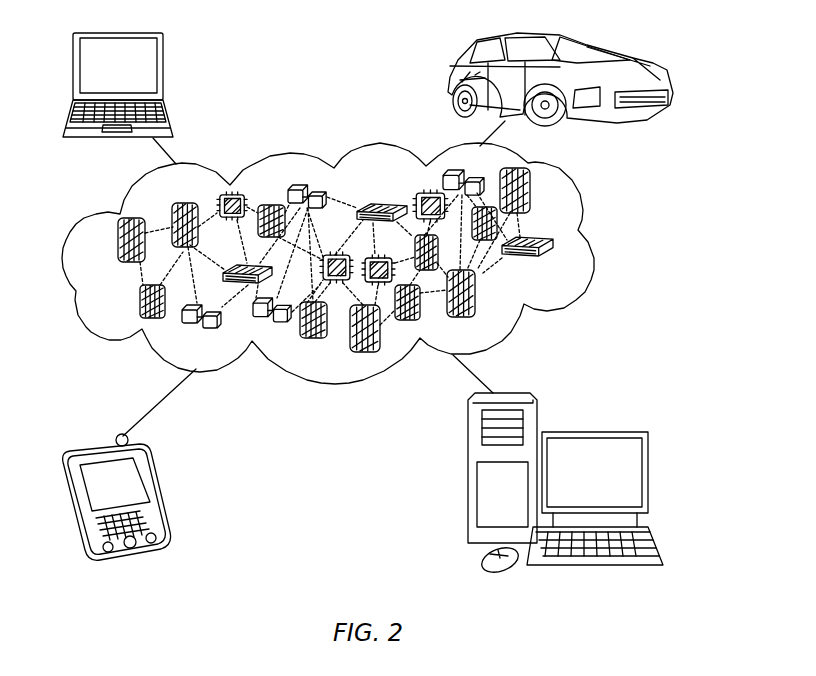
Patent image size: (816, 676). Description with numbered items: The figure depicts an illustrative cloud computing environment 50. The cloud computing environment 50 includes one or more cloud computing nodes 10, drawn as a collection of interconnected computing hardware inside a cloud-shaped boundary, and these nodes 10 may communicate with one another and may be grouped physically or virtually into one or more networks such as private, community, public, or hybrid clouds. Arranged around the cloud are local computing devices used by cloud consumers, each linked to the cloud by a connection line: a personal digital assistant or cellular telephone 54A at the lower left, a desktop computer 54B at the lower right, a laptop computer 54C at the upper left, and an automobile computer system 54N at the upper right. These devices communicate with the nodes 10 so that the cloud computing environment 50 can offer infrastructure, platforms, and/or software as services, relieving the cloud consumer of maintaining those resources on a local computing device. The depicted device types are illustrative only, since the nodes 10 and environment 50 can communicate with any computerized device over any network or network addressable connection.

The cloud computing node 10 is at (558, 266).
The cloud computing environment 50 is at (591, 253).
The personal digital assistant or cellular telephone 54A is at (158, 493).
The desktop computer 54B is at (590, 431).
The laptop computer 54C is at (165, 76).
The automobile computer system 54N is at (447, 84).